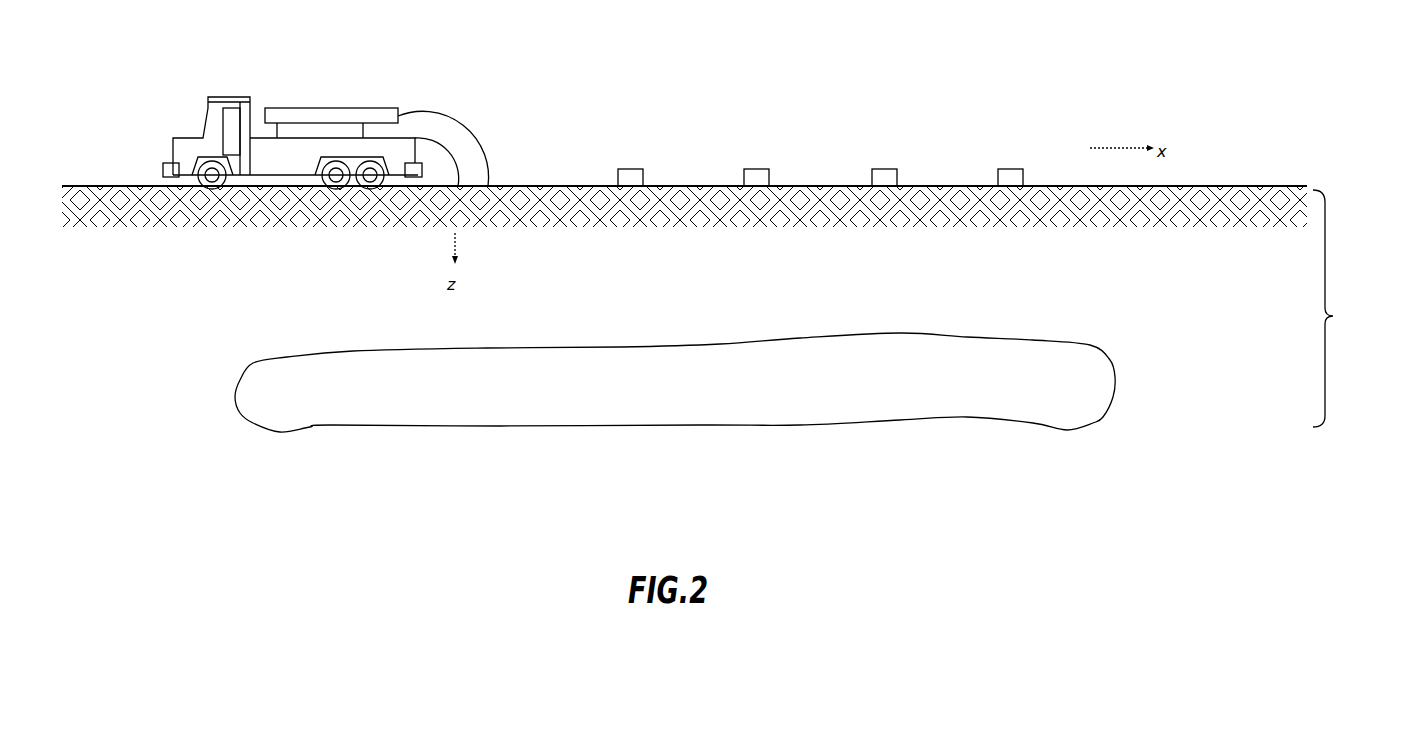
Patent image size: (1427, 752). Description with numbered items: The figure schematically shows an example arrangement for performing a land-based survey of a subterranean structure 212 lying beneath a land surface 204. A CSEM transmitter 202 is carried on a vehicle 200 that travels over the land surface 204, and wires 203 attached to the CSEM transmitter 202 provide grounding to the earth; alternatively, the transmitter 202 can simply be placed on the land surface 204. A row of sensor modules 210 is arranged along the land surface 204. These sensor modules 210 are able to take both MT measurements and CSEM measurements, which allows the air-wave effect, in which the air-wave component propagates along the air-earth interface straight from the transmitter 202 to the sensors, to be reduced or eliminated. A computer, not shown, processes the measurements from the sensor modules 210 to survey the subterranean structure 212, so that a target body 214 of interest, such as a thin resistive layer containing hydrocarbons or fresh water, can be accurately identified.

The vehicle 200 is at (185, 133).
The CSEM transmitter 202 is at (327, 108).
The wires 203 is at (452, 148).
The land surface 204 is at (1222, 184).
The sensor modules 210 is at (628, 168).
The subterranean structure 212 is at (1333, 316).
The target body 214 is at (1100, 380).